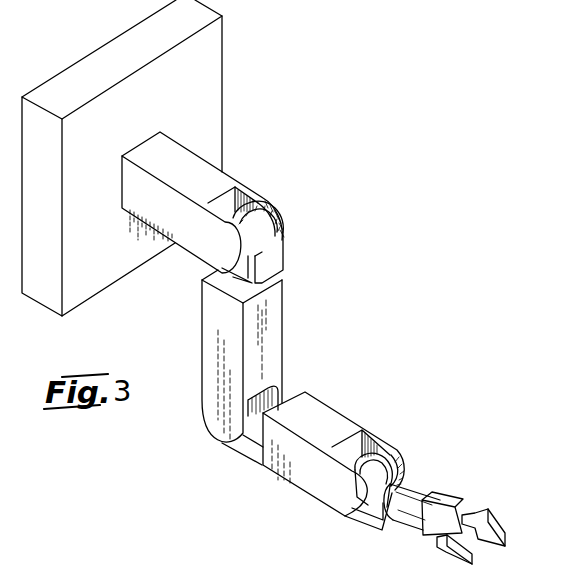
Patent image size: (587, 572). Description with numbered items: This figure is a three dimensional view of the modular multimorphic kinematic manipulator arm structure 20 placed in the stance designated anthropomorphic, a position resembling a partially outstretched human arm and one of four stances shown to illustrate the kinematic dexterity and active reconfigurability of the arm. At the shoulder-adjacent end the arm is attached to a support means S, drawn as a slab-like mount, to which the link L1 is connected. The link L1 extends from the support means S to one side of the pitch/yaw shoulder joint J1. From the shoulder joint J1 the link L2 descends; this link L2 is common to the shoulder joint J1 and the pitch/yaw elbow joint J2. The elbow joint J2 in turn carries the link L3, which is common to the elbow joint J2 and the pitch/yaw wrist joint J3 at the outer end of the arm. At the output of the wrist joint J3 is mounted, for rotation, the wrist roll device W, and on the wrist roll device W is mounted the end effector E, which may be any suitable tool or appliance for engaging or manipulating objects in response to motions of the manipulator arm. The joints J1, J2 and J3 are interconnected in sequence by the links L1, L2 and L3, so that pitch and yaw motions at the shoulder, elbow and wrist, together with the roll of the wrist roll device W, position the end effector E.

The support means S is at (157, 159).
The modular multimorphic kinematic manipulator arm structure 20 is at (157, 319).
The link L1 is at (195, 170).
The pitch/yaw shoulder joint J1 is at (290, 231).
The link L2 is at (270, 318).
The pitch/yaw elbow joint J2 is at (292, 383).
The link L3 is at (323, 420).
The pitch/yaw wrist joint J3 is at (407, 455).
The wrist roll device W is at (405, 530).
The end effector E is at (500, 519).